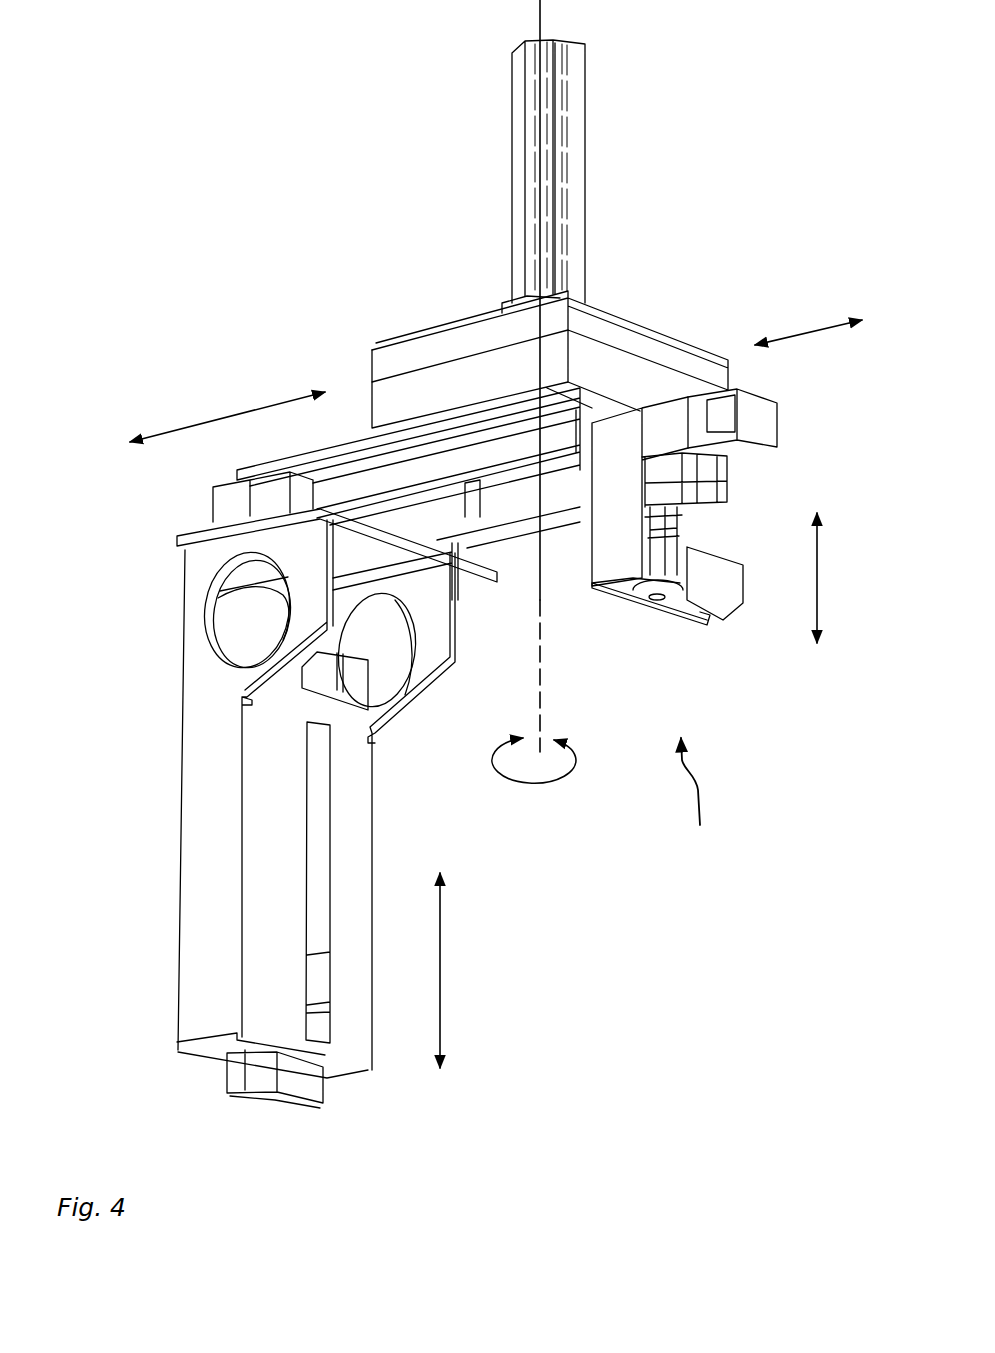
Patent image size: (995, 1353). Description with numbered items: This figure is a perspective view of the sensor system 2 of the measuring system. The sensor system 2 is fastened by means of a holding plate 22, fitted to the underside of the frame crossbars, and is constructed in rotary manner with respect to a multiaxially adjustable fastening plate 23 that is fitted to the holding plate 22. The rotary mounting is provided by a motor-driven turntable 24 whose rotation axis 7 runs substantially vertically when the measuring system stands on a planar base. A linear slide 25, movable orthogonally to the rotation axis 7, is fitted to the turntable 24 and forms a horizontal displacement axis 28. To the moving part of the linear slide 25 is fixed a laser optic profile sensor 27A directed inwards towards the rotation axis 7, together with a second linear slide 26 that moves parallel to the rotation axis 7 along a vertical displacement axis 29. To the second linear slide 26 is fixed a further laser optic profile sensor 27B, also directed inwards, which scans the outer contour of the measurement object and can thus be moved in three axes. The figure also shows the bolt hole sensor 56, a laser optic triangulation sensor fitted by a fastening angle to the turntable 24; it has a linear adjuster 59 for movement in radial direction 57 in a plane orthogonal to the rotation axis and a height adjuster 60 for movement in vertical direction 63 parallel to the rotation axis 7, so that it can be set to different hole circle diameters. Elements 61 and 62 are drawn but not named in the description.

The sensor system 2 is at (148, 918).
The rotation axis 7 is at (541, 23).
The holding plate 22 is at (632, 332).
The fastening plate 23 is at (460, 345).
The turntable 24 is at (405, 386).
The linear slide 25 is at (520, 538).
The second linear slide 26 is at (315, 982).
The laser optic profile sensor 27A is at (280, 1097).
The laser optic profile sensor 27B is at (313, 1033).
The horizontal displacement axis 28 is at (219, 417).
The vertical displacement axis 29 is at (442, 955).
The bolt hole sensor 56 is at (700, 806).
The radial direction 57 is at (805, 328).
The linear adjuster 59 is at (762, 425).
The height adjuster 60 is at (573, 203).
The mounting plate 61 is at (721, 601).
The connecting bracket 62 is at (647, 622).
The vertical direction 63 is at (818, 578).